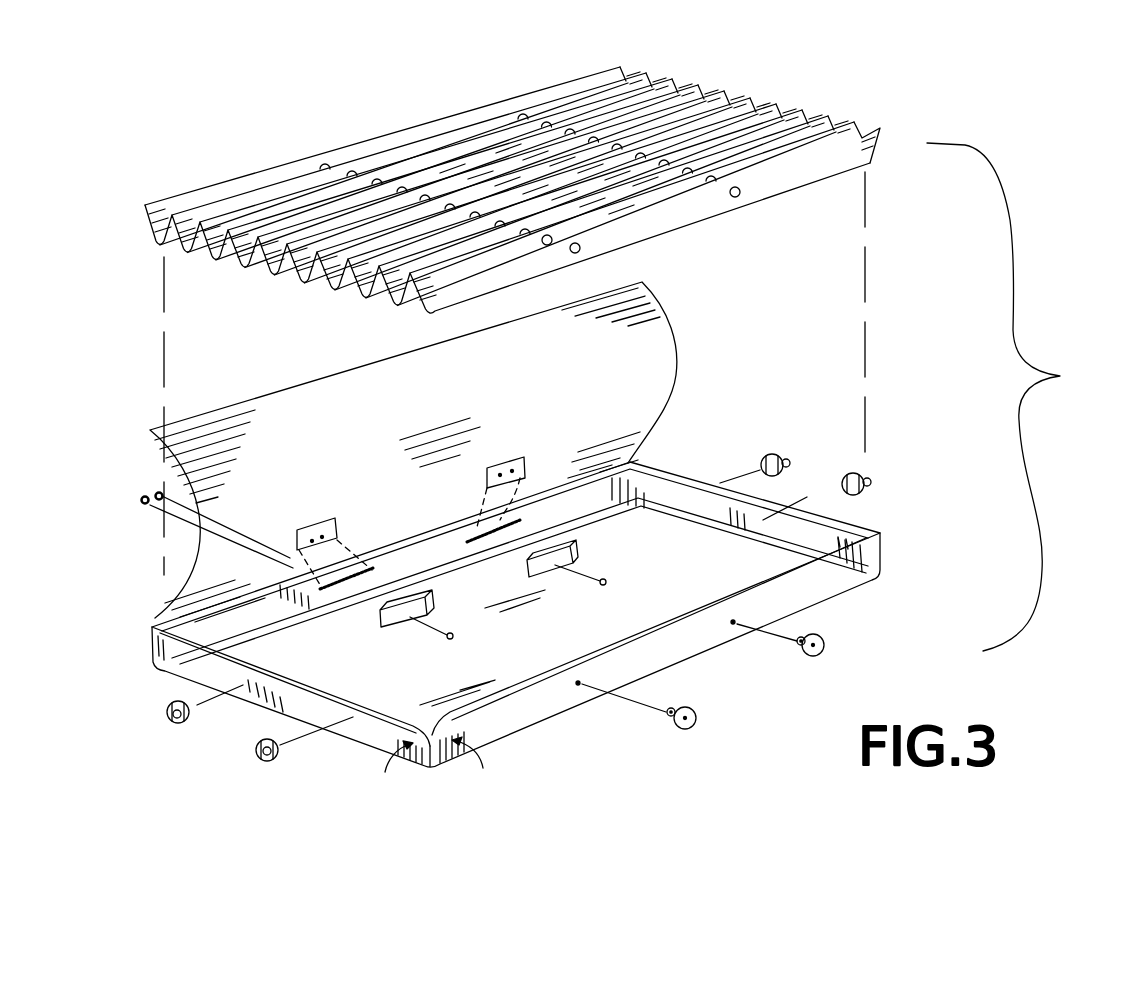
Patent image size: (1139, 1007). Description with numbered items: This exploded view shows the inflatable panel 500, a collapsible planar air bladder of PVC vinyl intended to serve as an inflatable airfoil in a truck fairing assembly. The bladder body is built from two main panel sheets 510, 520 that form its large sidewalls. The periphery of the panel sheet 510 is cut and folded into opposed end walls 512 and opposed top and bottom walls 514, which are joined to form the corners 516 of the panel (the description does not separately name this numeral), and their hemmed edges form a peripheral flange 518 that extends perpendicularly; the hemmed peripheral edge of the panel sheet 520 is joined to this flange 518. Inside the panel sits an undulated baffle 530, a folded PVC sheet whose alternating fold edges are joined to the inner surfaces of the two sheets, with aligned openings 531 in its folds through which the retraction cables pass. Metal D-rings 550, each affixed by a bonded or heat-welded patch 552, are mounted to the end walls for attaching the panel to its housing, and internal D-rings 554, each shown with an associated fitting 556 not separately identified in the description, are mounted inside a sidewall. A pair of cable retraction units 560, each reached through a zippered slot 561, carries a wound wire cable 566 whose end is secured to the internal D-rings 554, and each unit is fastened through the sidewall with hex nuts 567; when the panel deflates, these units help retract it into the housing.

The inflatable panel 500 is at (1018, 397).
The panel sheet 510 is at (650, 548).
The end wall 512 is at (500, 722).
The top and bottom walls 514 is at (185, 662).
The side wall 516 is at (432, 762).
The peripheral flange 518 is at (297, 682).
The panel sheet 520 is at (290, 437).
The undulated baffle 530 is at (657, 123).
The holes in corrugated sheet 531 is at (582, 249).
The D-ring 550 is at (872, 480).
The patch 552 is at (862, 500).
The internal D-ring 554 is at (800, 635).
The retaining ring 556 is at (813, 656).
The cable retraction unit 560 is at (428, 596).
The zippered slot 561 is at (538, 485).
The wire cable 566 is at (446, 636).
The hex nut 567 is at (145, 497).